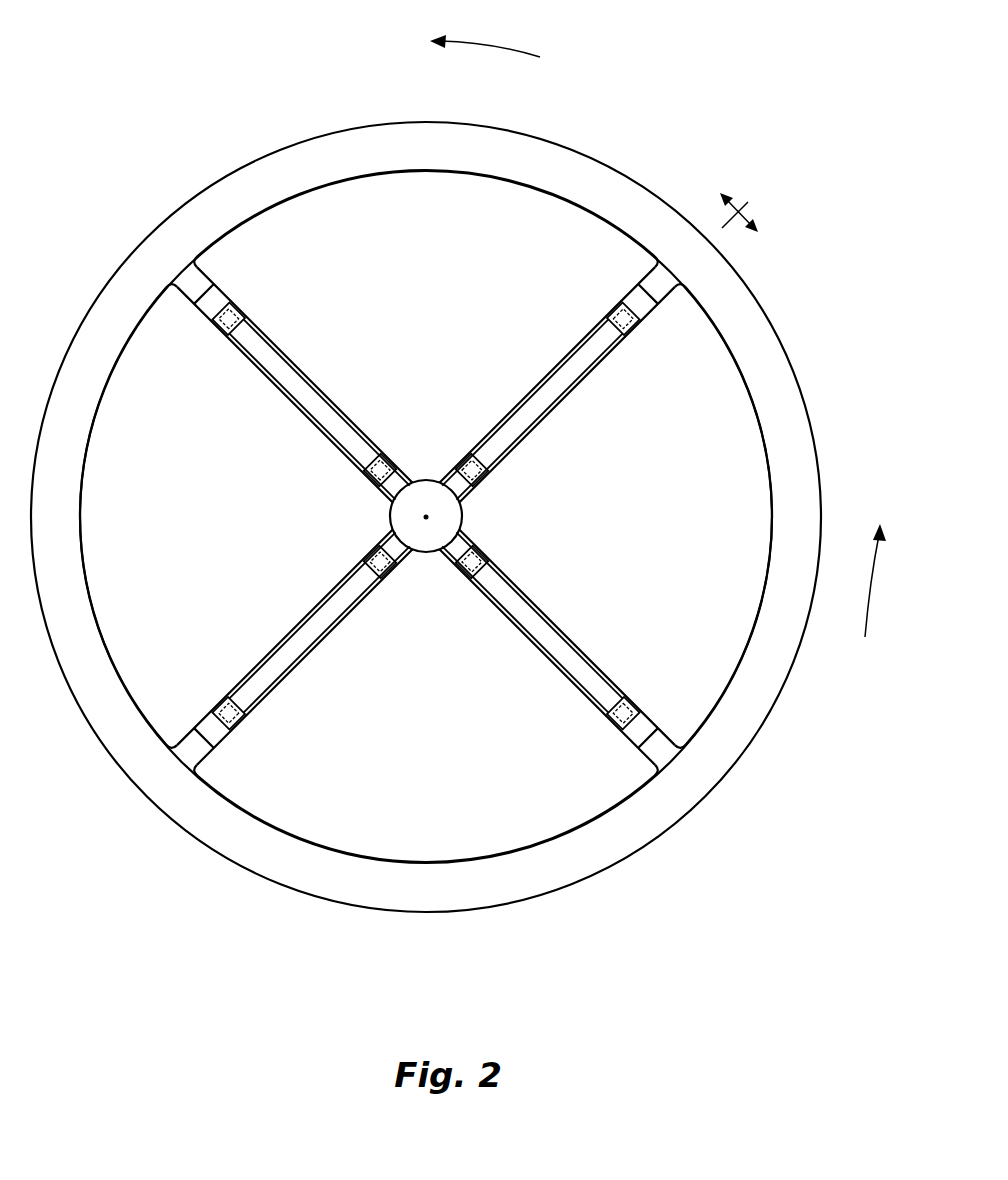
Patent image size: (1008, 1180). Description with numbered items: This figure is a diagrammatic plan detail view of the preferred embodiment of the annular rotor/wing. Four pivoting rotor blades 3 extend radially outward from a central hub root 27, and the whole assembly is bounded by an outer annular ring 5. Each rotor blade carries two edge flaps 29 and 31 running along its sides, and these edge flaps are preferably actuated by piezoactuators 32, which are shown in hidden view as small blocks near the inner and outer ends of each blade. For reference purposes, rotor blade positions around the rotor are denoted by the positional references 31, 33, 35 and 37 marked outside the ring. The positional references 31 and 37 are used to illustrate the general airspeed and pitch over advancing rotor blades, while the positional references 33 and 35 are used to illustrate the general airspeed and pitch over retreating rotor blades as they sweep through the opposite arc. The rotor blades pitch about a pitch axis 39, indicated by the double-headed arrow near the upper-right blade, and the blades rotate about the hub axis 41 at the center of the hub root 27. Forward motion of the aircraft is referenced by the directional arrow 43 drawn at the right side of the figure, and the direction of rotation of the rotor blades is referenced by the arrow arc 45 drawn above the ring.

The pivoting rotor blade 3 is at (582, 365).
The rim 5 is at (572, 887).
The hub root 27 is at (431, 543).
The edge flap 29 is at (300, 368).
The edge flap 31 is at (265, 385).
The piezoactuator 32 is at (238, 316).
The rotor blade positional reference 33 is at (98, 216).
The rotor blade positional reference 35 is at (143, 851).
The rotor blade positional reference 37 is at (748, 821).
The pitch axis 39 is at (739, 223).
The hub axis 41 is at (426, 517).
The directional arrow 43 is at (890, 580).
The arrow arc 45 is at (485, 37).